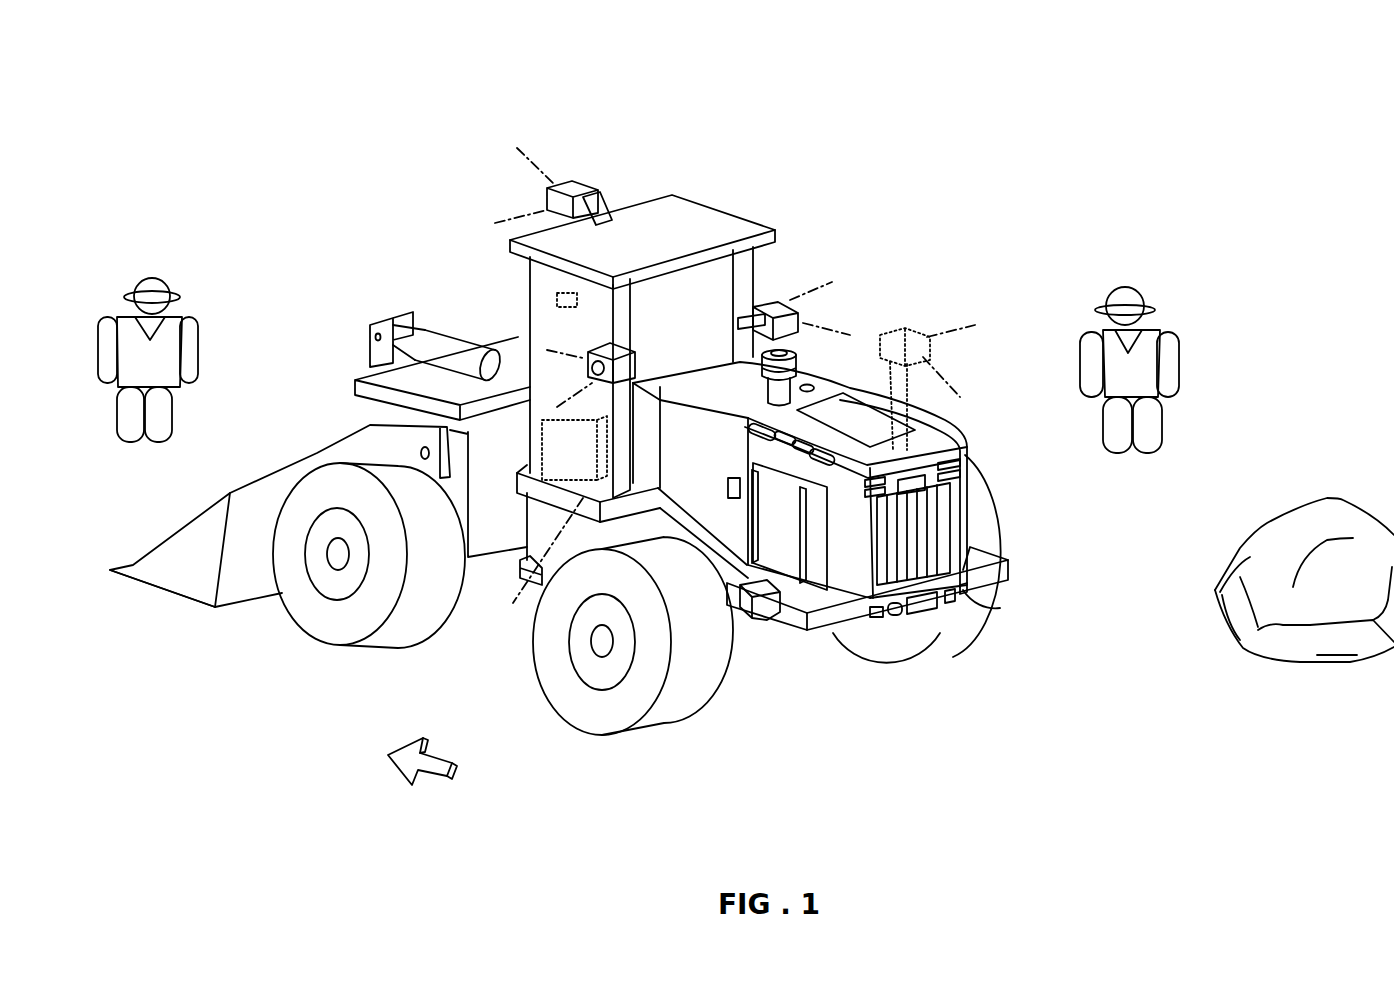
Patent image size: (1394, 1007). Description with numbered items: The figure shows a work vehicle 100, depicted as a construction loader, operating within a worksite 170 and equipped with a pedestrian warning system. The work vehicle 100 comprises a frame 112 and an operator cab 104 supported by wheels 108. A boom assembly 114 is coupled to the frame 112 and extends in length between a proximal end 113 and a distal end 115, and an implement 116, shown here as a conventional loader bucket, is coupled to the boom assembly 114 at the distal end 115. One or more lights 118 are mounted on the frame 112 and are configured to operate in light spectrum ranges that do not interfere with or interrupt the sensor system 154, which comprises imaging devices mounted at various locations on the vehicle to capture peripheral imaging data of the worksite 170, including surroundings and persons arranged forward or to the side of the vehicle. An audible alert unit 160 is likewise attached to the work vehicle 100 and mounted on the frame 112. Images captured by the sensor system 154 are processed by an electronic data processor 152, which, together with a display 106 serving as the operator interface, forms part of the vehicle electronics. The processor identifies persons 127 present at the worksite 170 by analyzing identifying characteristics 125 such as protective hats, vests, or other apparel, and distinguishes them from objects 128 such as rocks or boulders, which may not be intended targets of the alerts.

The work vehicle 100 is at (485, 124).
The operator cab 104 is at (742, 268).
The display 106 is at (558, 293).
The wheels 108 is at (422, 585).
The frame 112 is at (783, 623).
The proximal end 113 is at (433, 293).
The boom assembly 114 is at (318, 418).
The distal end 115 is at (275, 612).
The implement 116 is at (197, 553).
The lights 118 is at (960, 462).
The identifying characteristics 125 is at (167, 287).
The persons 127 is at (138, 268).
The objects 128 is at (1333, 516).
The electronic data processor 152 is at (538, 560).
The sensor system 154 is at (578, 188).
The audible alert unit 160 is at (920, 487).
The worksite 170 is at (870, 148).